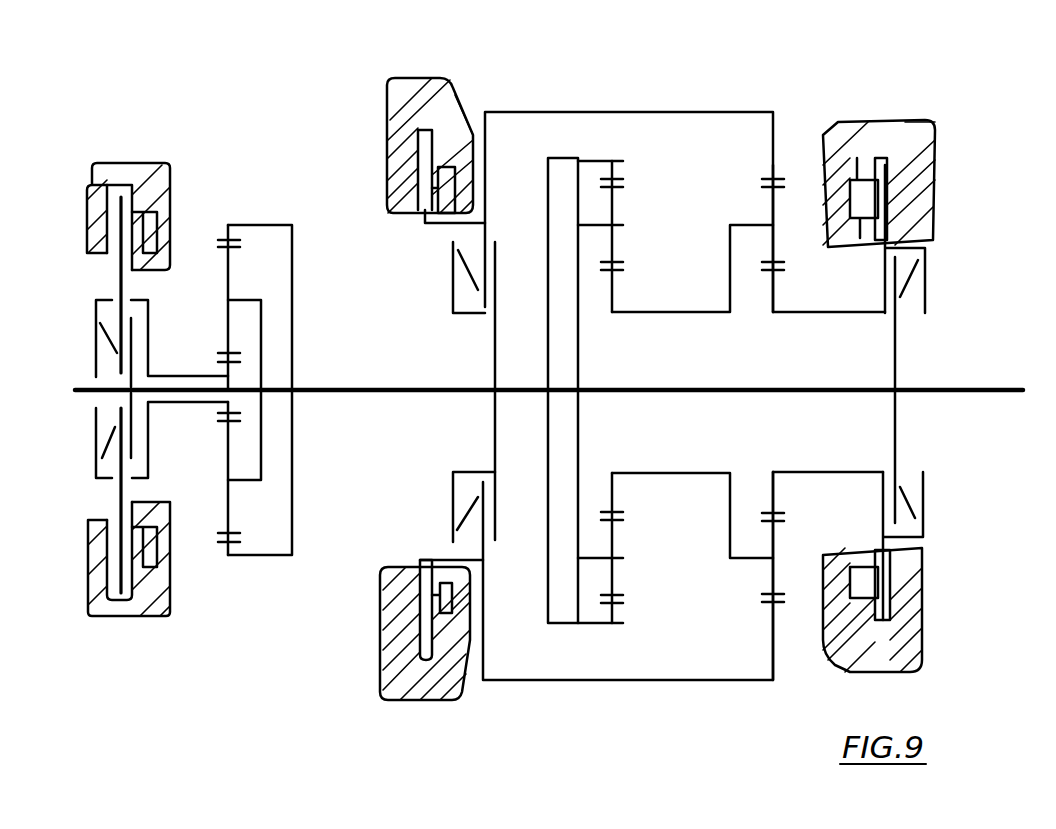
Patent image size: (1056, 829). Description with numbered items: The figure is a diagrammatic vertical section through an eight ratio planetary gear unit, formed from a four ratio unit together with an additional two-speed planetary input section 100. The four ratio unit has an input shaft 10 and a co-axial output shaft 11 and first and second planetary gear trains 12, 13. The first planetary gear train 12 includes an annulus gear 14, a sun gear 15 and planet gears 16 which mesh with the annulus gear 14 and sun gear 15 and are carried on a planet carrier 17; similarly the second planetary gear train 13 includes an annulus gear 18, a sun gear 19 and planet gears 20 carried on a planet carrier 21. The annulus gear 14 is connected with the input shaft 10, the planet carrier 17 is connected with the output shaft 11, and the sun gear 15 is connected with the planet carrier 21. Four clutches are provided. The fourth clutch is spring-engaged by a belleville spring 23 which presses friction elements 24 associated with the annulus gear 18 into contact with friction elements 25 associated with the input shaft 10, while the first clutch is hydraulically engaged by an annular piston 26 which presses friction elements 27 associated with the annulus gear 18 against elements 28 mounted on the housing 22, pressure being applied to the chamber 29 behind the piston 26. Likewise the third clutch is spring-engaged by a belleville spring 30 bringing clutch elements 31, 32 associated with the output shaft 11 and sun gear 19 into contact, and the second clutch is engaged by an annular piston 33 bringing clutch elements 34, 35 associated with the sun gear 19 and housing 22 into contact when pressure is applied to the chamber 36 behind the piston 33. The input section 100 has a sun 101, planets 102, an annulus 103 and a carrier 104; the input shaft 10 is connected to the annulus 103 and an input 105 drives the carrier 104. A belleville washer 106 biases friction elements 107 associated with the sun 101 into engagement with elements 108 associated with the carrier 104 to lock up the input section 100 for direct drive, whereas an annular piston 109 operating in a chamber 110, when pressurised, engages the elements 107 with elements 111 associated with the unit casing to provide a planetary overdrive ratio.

The input shaft 10 is at (325, 389).
The output shaft 11 is at (935, 388).
The first planetary gear train 12 is at (577, 592).
The second planetary gear train 13 is at (784, 574).
The annulus gear 14 is at (610, 165).
The sun gear 15 is at (618, 278).
The planet gears 16 is at (618, 202).
The planet carrier 17 is at (582, 307).
The annulus gear 18 is at (773, 172).
The sun gear 19 is at (767, 287).
The planet gears 20 is at (773, 202).
The planet carrier 21 is at (732, 293).
The housing 22 is at (440, 92).
The belleville spring 23 is at (460, 273).
The friction elements 24 is at (498, 258).
The friction elements 25 is at (498, 280).
The annular piston 26 is at (432, 188).
The friction elements 27 is at (445, 150).
The friction elements 28 is at (397, 160).
The chamber 29 is at (443, 222).
The belleville spring 30 is at (910, 537).
The clutch elements 31 is at (897, 437).
The clutch elements 32 is at (883, 505).
The annular piston 33 is at (863, 232).
The clutch elements 34 is at (930, 203).
The clutch elements 35 is at (927, 153).
The chamber 36 is at (827, 247).
The two-speed planetary input section 100 is at (270, 537).
The sun 101 is at (262, 423).
The planets 102 is at (232, 273).
The annulus 103 is at (223, 238).
The carrier 104 is at (262, 348).
The input 105 is at (81, 383).
The belleville washer 106 is at (132, 457).
The friction elements 107 is at (124, 283).
The friction elements 108 is at (133, 355).
The annular piston 109 is at (128, 205).
The chamber 110 is at (170, 205).
The friction elements 111 is at (88, 205).